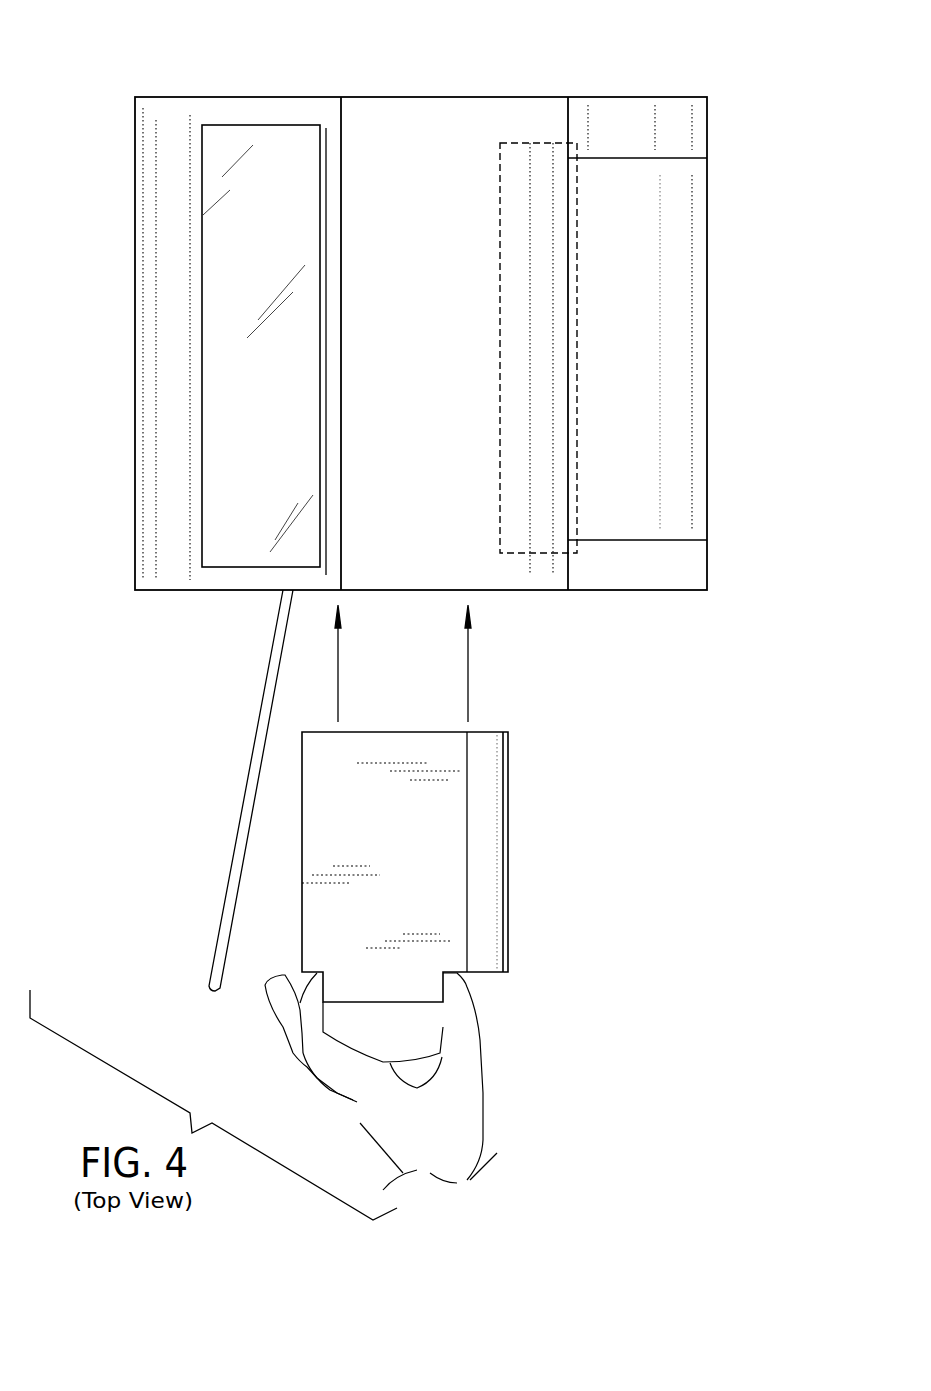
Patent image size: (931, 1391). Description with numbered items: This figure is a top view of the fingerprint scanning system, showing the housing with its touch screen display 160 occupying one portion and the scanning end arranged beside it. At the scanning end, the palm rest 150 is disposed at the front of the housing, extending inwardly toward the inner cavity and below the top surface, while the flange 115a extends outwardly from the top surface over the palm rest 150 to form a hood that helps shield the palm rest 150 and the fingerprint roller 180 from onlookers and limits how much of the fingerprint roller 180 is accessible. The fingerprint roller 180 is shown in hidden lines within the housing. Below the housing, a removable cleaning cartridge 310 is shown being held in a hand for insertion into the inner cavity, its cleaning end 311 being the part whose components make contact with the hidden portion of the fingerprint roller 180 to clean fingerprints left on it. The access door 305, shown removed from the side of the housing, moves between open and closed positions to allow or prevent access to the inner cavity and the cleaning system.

The touch screen display 160 is at (265, 140).
The flange 115a is at (570, 115).
The palm rest 150 is at (687, 300).
The fingerprint roller 180 is at (578, 413).
The access door 305 is at (247, 760).
The cleaning cartridge 310 is at (467, 852).
The cleaning end 311 is at (513, 780).